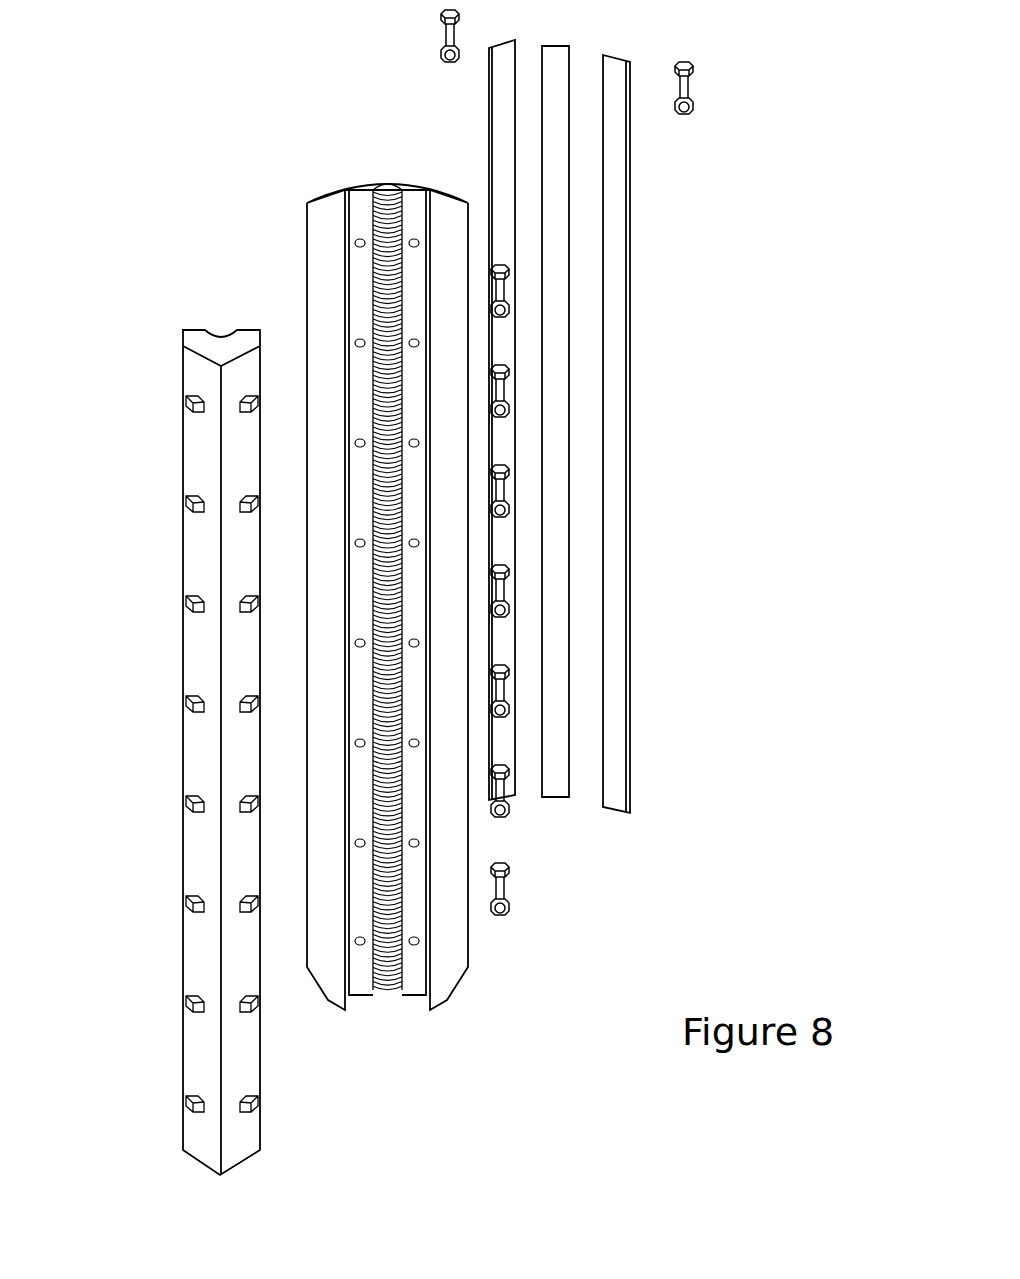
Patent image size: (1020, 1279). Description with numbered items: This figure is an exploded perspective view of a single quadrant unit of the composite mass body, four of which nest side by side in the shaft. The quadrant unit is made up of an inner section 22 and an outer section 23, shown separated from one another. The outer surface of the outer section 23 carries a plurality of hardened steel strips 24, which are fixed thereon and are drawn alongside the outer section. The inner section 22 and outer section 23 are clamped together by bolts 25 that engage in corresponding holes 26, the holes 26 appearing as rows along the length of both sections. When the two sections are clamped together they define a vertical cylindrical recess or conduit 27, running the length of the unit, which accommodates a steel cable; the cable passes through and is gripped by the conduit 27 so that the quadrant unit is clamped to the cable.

The inner section 22 is at (196, 336).
The outer section 23 is at (322, 212).
The hardened steel strips 24 is at (617, 342).
The bolts 25 is at (697, 88).
The holes 26 is at (187, 703).
The vertical cylindrical recess or conduit 27 is at (386, 183).